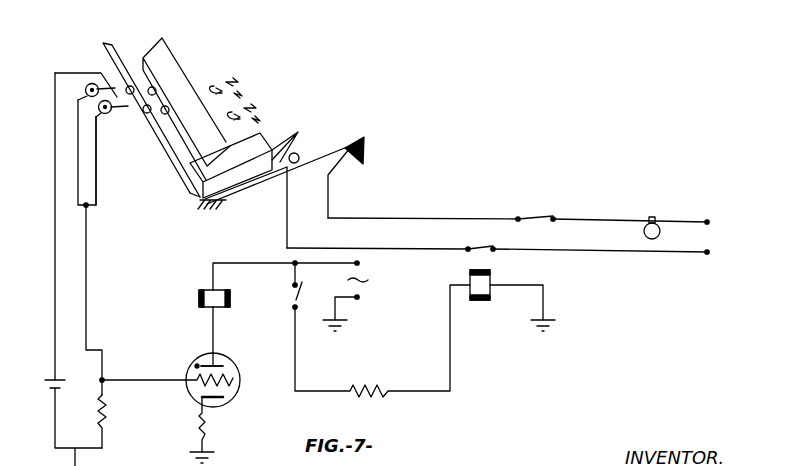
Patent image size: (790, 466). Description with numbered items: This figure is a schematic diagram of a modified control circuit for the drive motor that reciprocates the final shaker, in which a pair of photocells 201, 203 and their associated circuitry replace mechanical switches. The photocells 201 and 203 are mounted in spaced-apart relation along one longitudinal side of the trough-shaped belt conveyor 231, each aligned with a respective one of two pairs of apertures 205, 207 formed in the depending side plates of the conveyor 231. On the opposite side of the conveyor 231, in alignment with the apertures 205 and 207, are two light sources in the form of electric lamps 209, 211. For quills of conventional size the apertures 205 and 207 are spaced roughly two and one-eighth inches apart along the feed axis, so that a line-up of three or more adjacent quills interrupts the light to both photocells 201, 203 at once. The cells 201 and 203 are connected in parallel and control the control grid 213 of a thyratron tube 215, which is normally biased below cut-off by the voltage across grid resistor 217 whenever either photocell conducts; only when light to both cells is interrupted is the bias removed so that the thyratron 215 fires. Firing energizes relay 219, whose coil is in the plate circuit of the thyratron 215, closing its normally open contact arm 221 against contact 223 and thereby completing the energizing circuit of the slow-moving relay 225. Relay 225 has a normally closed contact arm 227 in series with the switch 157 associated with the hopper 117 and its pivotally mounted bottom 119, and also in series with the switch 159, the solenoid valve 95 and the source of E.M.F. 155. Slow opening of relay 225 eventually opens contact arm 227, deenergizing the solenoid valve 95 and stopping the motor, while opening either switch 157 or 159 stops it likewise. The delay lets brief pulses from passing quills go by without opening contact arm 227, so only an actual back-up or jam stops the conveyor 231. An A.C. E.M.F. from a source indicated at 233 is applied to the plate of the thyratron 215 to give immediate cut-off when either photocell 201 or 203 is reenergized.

The solenoid valve 95 is at (652, 216).
The hopper 117 is at (278, 146).
The pivotally mounted bottom 119 is at (236, 180).
The source of E.M.F. 155 is at (709, 236).
The switch 157 is at (362, 157).
The switch 159 is at (540, 218).
The photocell 201 is at (85, 90).
The photocell 203 is at (150, 124).
The apertures 205 is at (117, 84).
The apertures 207 is at (120, 161).
The electric lamp 209 is at (210, 86).
The electric lamp 211 is at (242, 110).
The control grid 213 is at (230, 380).
The thyratron tube 215 is at (224, 352).
The grid resistor 217 is at (108, 412).
The relay 219 is at (198, 302).
The contact arm 221 is at (294, 308).
The contact 223 is at (293, 287).
The slow-moving relay 225 is at (490, 292).
The contact arm 227 is at (484, 236).
The trough-shaped belt conveyor 231 is at (110, 46).
The A.C. E.M.F. source 233 is at (362, 290).